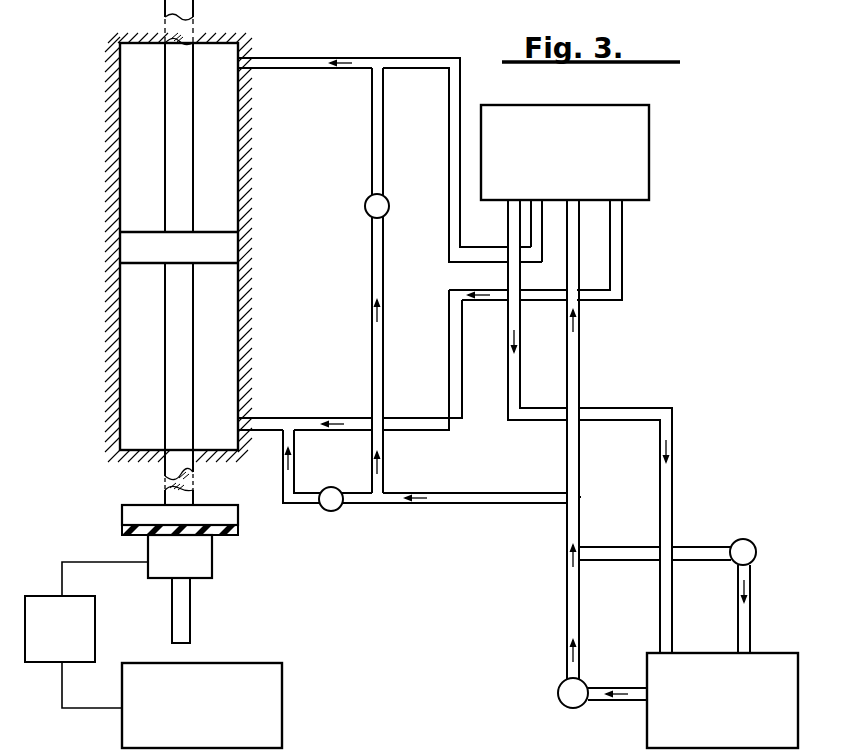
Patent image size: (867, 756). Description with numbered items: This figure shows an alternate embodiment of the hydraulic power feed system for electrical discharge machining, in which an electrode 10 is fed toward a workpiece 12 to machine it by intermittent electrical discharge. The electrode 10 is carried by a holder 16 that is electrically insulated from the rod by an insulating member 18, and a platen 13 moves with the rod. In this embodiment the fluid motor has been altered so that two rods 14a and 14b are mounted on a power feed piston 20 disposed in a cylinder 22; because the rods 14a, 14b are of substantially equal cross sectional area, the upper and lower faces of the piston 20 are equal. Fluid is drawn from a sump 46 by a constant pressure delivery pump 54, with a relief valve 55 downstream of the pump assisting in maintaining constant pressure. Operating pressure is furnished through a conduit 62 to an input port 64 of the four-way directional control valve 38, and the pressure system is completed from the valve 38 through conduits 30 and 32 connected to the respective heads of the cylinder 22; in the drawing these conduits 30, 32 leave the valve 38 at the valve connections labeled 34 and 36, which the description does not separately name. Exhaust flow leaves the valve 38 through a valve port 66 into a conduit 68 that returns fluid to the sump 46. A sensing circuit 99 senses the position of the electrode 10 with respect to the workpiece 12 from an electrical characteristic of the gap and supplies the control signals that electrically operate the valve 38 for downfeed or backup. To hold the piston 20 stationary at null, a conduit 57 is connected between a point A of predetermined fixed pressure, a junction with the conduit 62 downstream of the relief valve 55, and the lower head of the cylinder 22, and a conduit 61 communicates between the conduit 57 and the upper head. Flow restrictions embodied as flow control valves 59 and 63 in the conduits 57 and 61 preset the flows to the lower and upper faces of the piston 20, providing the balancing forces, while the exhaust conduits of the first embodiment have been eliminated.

The electrode 10 is at (180, 615).
The workpiece 12 is at (282, 689).
The platen 13 is at (122, 514).
The upper rod 14a is at (190, 187).
The lower rod 14b is at (190, 355).
The holder 16 is at (212, 562).
The insulating member 18 is at (240, 533).
The power feed piston 20 is at (232, 250).
The cylinder 22 is at (243, 126).
The conduit 30 is at (410, 58).
The conduit 32 is at (462, 340).
The valve port 34 is at (540, 200).
The valve port 36 is at (613, 200).
The directional control valve 38 is at (650, 161).
The sump 46 is at (728, 691).
The constant pressure delivery pump 54 is at (558, 690).
The relief valve 55 is at (753, 545).
The conduit 57 is at (468, 502).
The flow control valve 59 is at (331, 511).
The conduit 61 is at (372, 268).
The conduit 62 is at (579, 367).
The flow control valve 63 is at (390, 206).
The input port 64 is at (570, 200).
The valve port 66 is at (512, 200).
The conduit 68 is at (521, 328).
The sensing circuit 99 is at (72, 655).
The point A is at (581, 498).